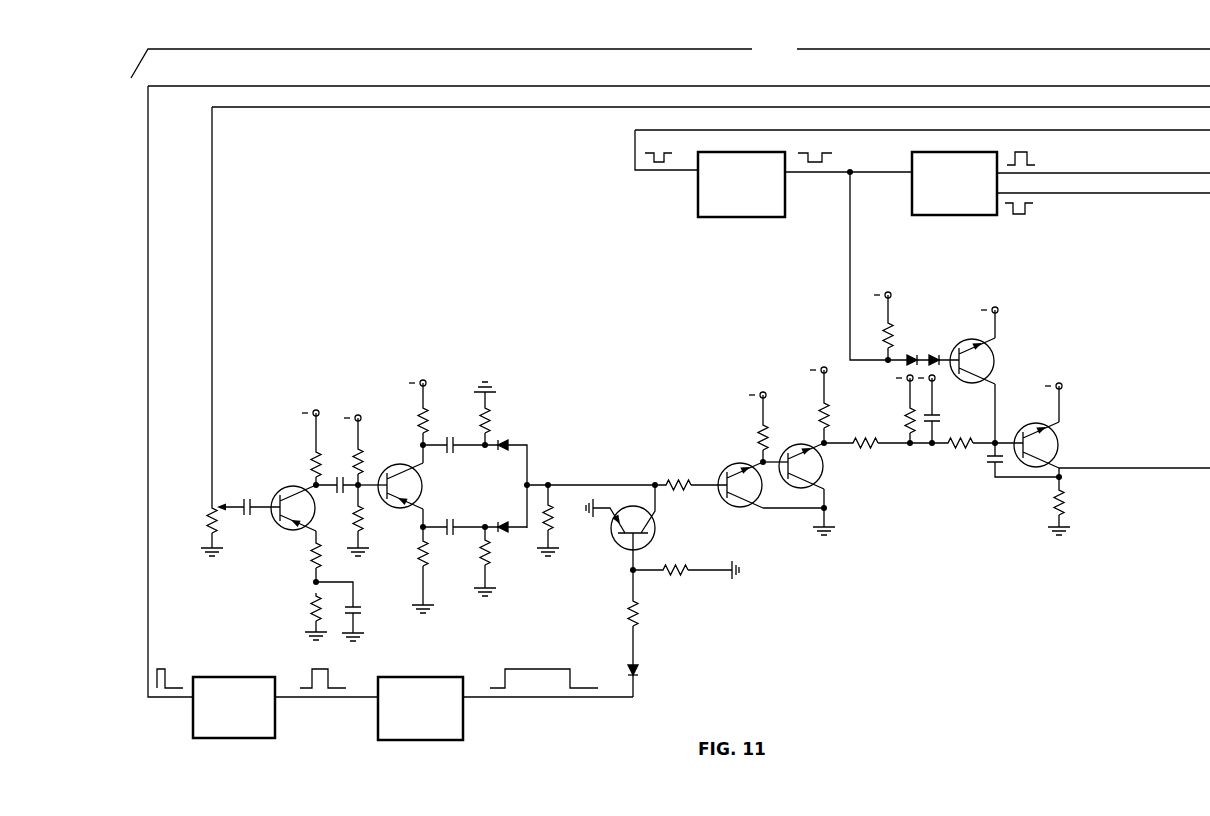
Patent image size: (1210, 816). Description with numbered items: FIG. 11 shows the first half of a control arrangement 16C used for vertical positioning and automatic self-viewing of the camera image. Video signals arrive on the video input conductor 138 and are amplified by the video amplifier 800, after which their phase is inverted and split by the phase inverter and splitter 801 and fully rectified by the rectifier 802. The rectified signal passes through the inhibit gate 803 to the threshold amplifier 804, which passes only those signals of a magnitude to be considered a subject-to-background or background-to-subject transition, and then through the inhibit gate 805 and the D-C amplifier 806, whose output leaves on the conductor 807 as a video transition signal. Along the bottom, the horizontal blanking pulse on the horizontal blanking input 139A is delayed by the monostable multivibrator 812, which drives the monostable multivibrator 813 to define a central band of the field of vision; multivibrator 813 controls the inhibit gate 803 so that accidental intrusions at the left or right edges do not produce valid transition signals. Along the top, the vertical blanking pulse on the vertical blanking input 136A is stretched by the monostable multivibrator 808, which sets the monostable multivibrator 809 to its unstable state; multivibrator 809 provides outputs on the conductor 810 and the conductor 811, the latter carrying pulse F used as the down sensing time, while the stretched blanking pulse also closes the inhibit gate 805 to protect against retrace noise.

The control arrangement 16C is at (670, 60).
The horizontal blanking input 139A is at (666, 82).
The video input conductor 138 is at (595, 104).
The vertical blanking input 136A is at (977, 127).
The video amplifier 800 is at (291, 443).
The phase inverter and splitter 801 is at (443, 392).
The rectifier 802 is at (486, 503).
The inhibit gate 803 is at (633, 468).
The threshold amplifier 804 is at (780, 520).
The inhibit gate 805 is at (1062, 323).
The D-C amplifier 806 is at (1021, 524).
The conductor 807 is at (1159, 462).
The monostable multivibrator 808 is at (773, 173).
The monostable multivibrator 809 is at (981, 185).
The output conductor 810 is at (1182, 170).
The conductor 811 is at (1182, 193).
The monostable multivibrator 812 is at (263, 412).
The monostable multivibrator 813 is at (505, 704).